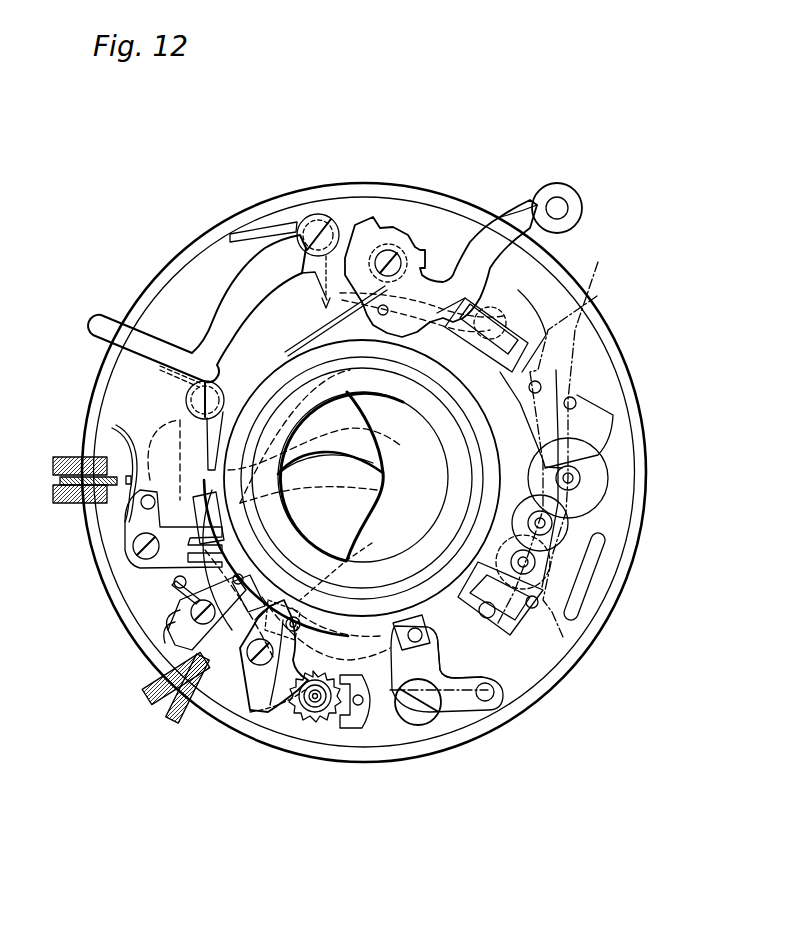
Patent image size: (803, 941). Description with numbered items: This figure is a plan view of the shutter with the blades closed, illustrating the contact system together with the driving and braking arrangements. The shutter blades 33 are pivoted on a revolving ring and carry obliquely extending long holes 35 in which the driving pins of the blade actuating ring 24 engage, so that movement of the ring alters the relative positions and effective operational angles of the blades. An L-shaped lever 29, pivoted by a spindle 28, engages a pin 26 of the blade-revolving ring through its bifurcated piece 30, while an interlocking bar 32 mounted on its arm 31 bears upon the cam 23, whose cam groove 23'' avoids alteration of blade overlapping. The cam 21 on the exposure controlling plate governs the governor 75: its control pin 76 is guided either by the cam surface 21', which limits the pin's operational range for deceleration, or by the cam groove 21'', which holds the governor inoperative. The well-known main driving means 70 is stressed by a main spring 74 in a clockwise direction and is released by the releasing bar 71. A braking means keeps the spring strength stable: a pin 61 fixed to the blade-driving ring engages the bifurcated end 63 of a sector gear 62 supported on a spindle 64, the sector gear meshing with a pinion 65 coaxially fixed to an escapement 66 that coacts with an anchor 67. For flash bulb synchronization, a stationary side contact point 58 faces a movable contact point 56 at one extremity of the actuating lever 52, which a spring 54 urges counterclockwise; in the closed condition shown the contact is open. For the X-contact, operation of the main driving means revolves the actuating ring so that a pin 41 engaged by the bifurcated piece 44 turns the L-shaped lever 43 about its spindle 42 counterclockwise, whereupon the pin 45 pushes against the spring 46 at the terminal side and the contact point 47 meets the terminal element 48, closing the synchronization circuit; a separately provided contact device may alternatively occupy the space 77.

The cam 21 is at (561, 452).
The cam surface 21' is at (590, 449).
The cam groove 21'' is at (580, 671).
The cam 23 is at (384, 779).
The cam groove 23'' is at (480, 773).
The blade actuating ring 24 is at (480, 636).
The pin 26 is at (400, 645).
The spindle 28 is at (433, 722).
The L-shaped lever 29 is at (432, 725).
The bifurcated piece 30 is at (435, 637).
The arm 31 is at (458, 722).
The interlocking bar 32 is at (496, 706).
The shutter blades 33 is at (387, 490).
The long holes 35 is at (348, 566).
The pin 41 is at (163, 568).
The spindle 42 is at (140, 548).
The L-shaped lever 43 is at (100, 540).
The bifurcated piece 44 is at (198, 532).
The pin 45 is at (137, 527).
The spring 46 is at (110, 437).
The contact point 47 is at (128, 478).
The terminal block 48 is at (82, 468).
The actuating lever 52 is at (175, 592).
The spring 54 is at (162, 625).
The contact point 56 is at (160, 643).
The stationary side contact point 58 is at (150, 672).
The pin 61 is at (278, 700).
The sector gear 62 is at (262, 680).
The bifurcated end 63 is at (306, 695).
The spindle 64 is at (250, 685).
The pinion 65 is at (312, 712).
The escapement 66 is at (340, 722).
The anchor 67 is at (357, 718).
The main driving means 70 is at (440, 268).
The releasing bar 71 is at (213, 360).
The main spring 74 is at (355, 232).
The governor 75 is at (607, 480).
The control pin 76 is at (577, 401).
The space 77 is at (110, 542).